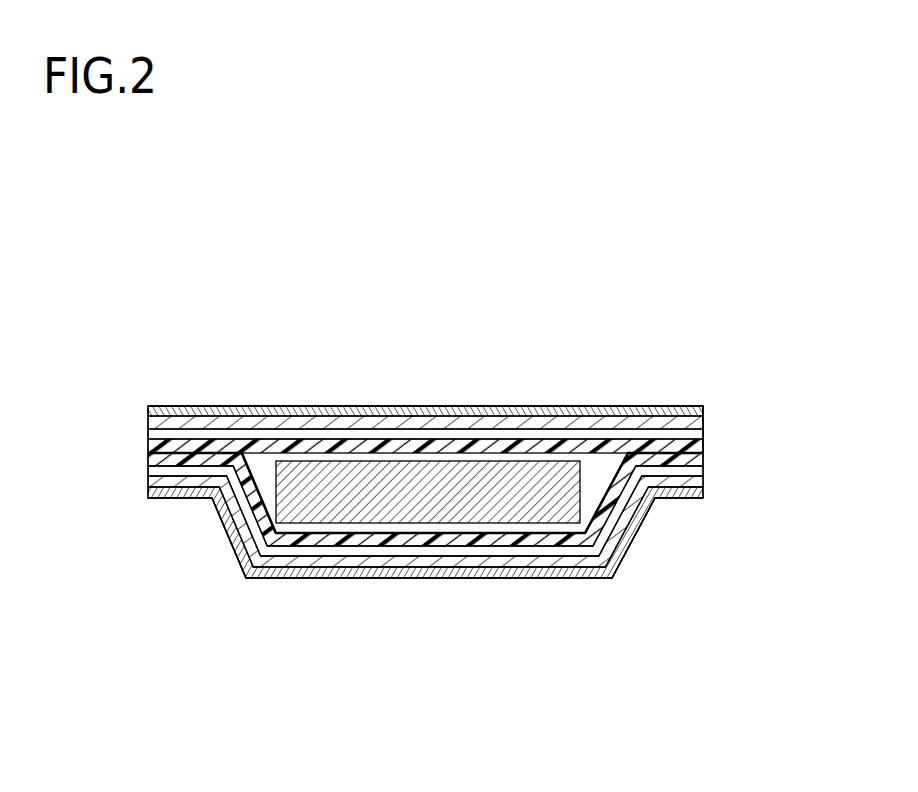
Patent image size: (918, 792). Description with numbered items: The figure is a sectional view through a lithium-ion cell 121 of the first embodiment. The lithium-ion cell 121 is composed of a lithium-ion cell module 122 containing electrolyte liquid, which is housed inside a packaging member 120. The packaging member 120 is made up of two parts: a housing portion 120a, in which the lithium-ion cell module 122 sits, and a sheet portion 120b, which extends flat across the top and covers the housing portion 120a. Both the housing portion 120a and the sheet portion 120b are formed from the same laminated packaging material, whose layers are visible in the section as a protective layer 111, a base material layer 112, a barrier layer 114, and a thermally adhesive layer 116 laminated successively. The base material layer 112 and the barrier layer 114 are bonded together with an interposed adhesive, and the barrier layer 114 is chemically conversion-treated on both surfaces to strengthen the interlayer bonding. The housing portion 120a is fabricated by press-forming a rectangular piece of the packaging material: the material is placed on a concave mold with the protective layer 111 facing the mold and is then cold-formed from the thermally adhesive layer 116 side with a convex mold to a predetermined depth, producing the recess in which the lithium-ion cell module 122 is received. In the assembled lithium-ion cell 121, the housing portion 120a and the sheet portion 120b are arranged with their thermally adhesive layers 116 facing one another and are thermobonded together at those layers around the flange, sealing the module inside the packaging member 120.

The protective layer 111 is at (148, 411).
The base material layer 112 is at (148, 422).
The barrier layer 114 is at (148, 434).
The thermally adhesive layer 116 is at (148, 446).
The packaging member 120 is at (703, 406).
The housing portion 120a is at (240, 562).
The sheet portion 120b is at (300, 406).
The lithium-ion cell 121 is at (623, 587).
The lithium-ion cell module 122 is at (303, 510).